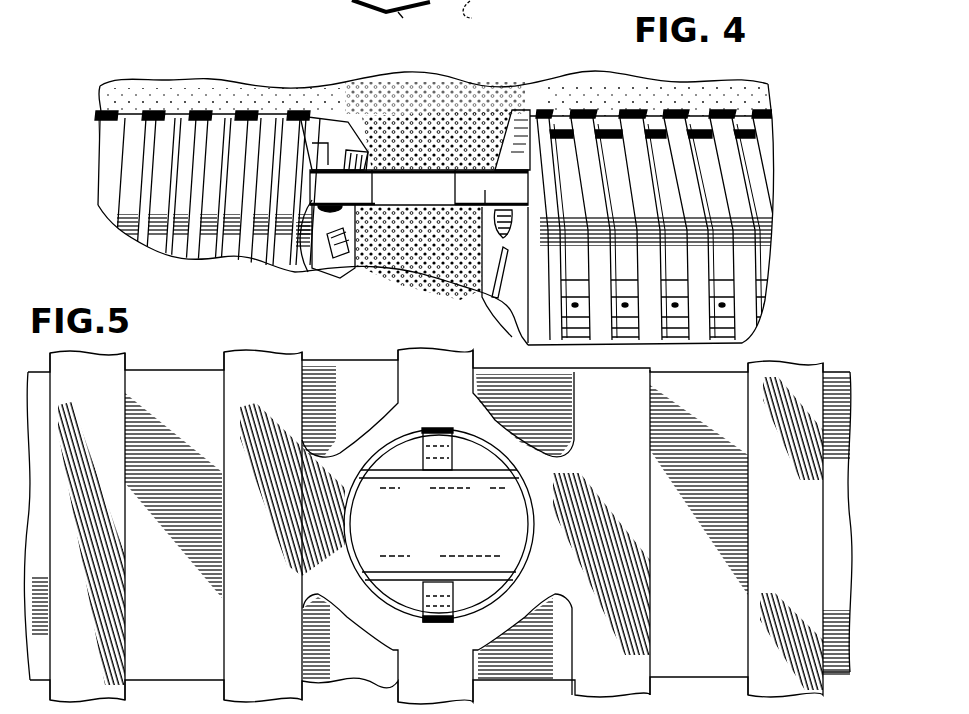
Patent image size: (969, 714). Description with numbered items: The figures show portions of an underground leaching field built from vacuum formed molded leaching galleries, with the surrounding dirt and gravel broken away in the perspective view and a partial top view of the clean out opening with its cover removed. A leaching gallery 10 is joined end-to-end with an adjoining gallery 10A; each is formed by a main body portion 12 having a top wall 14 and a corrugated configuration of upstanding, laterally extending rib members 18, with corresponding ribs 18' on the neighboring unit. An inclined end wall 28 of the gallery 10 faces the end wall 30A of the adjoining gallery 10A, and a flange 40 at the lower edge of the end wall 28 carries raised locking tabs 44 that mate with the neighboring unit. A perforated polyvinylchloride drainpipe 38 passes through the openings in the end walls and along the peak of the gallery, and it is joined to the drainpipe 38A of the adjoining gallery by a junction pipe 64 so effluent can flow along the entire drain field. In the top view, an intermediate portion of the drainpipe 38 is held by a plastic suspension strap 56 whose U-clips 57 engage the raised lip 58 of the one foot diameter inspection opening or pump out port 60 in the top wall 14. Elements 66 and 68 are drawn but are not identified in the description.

In FIG. 4, the leaching gallery 10 is at (162, 104).
In FIG. 5, the leaching gallery 10 is at (180, 380).
In FIG. 4, the adjoining gallery 10A is at (688, 120).
In FIG. 5, the main body portion 12 is at (703, 652).
In FIG. 5, the top wall 14 is at (590, 640).
In FIG. 4, the rib member 18 is at (207, 202).
In FIG. 5, the rib member 18 is at (436, 530).
In FIG. 4, the rib member 18' is at (532, 109).
In FIG. 4, the end wall 28 is at (335, 142).
In FIG. 4, the end wall of adjoining gallery 30A is at (503, 312).
In FIG. 4, the drainpipe 38 is at (362, 185).
In FIG. 5, the drainpipe 38 is at (417, 522).
In FIG. 4, the drainpipe of adjoining gallery 38A is at (443, 284).
In FIG. 4, the flange 40 is at (407, 23).
In FIG. 4, the locking tab 44 is at (368, 8).
In FIG. 5, the suspension strap 56 is at (433, 440).
In FIG. 5, the U-clip 57 is at (440, 624).
In FIG. 5, the raised lip 58 is at (516, 486).
In FIG. 5, the inspection opening 60 is at (402, 458).
In FIG. 4, the junction pipe 64 is at (366, 266).
In FIG. 4, the cushion pad 66 is at (455, 148).
In FIG. 4, the aperture 68 is at (486, 13).